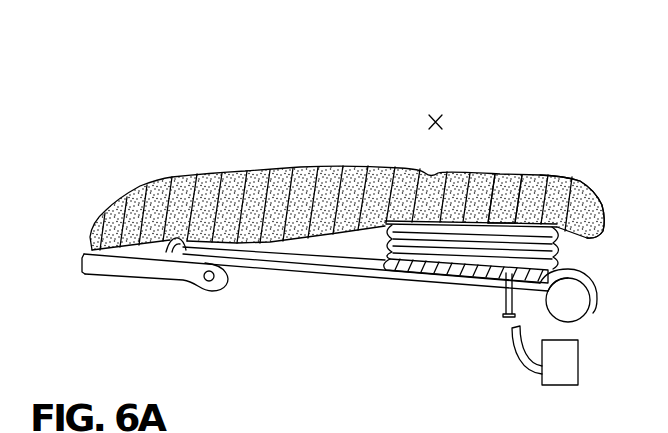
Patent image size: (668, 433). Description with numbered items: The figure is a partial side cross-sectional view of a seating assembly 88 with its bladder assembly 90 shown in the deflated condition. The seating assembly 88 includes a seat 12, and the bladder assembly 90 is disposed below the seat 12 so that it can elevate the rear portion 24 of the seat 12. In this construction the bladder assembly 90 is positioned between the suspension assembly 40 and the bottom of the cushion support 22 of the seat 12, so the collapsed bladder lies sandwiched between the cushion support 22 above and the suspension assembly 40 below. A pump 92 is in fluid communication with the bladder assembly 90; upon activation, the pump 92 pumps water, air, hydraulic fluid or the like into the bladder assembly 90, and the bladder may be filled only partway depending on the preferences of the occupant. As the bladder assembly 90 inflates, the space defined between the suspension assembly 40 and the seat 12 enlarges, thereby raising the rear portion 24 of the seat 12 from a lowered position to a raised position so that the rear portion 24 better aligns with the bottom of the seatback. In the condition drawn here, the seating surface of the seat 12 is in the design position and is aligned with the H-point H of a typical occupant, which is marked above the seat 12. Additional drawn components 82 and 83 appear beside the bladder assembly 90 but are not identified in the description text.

The seating assembly 88 is at (141, 133).
The seat 12 is at (252, 171).
The cushion support 22 is at (510, 200).
The rear portion 24 is at (588, 183).
The H-point H is at (438, 121).
The bladder assembly 90 is at (557, 256).
The suspension assembly 40 is at (285, 267).
The outer ring 82 is at (572, 279).
The inner roller 83 is at (578, 312).
The pump 92 is at (562, 366).